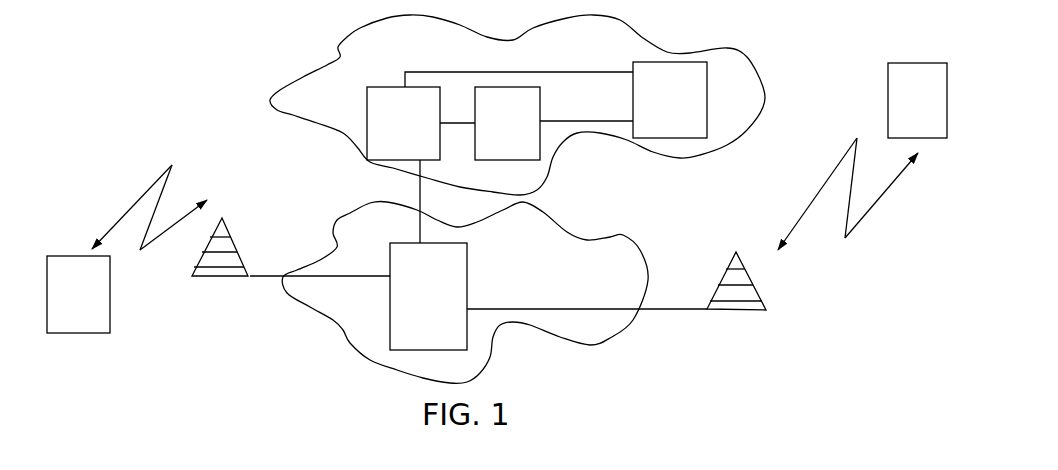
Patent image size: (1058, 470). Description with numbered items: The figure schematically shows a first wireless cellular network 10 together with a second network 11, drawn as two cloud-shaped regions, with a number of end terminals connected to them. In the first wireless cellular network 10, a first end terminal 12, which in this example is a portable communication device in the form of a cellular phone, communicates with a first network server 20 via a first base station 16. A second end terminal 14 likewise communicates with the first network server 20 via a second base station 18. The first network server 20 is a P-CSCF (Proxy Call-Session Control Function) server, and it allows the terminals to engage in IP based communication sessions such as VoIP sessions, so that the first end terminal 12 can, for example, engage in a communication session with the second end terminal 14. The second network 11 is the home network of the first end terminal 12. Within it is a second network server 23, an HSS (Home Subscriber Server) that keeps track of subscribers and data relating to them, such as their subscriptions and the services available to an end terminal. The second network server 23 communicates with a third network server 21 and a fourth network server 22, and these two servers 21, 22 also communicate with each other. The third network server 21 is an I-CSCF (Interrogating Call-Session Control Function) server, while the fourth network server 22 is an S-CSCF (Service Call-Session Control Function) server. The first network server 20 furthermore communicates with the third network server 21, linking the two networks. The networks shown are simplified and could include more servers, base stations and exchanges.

The first wireless cellular network 10 is at (340, 222).
The second network 11 is at (282, 90).
The first end terminal 12 is at (127, 249).
The second end terminal 14 is at (862, 156).
The first base station 16 is at (233, 269).
The second base station 18 is at (752, 302).
The first network server 20 is at (478, 296).
The third network server 21 is at (500, 157).
The fourth network server 22 is at (554, 123).
The second network server 23 is at (670, 100).